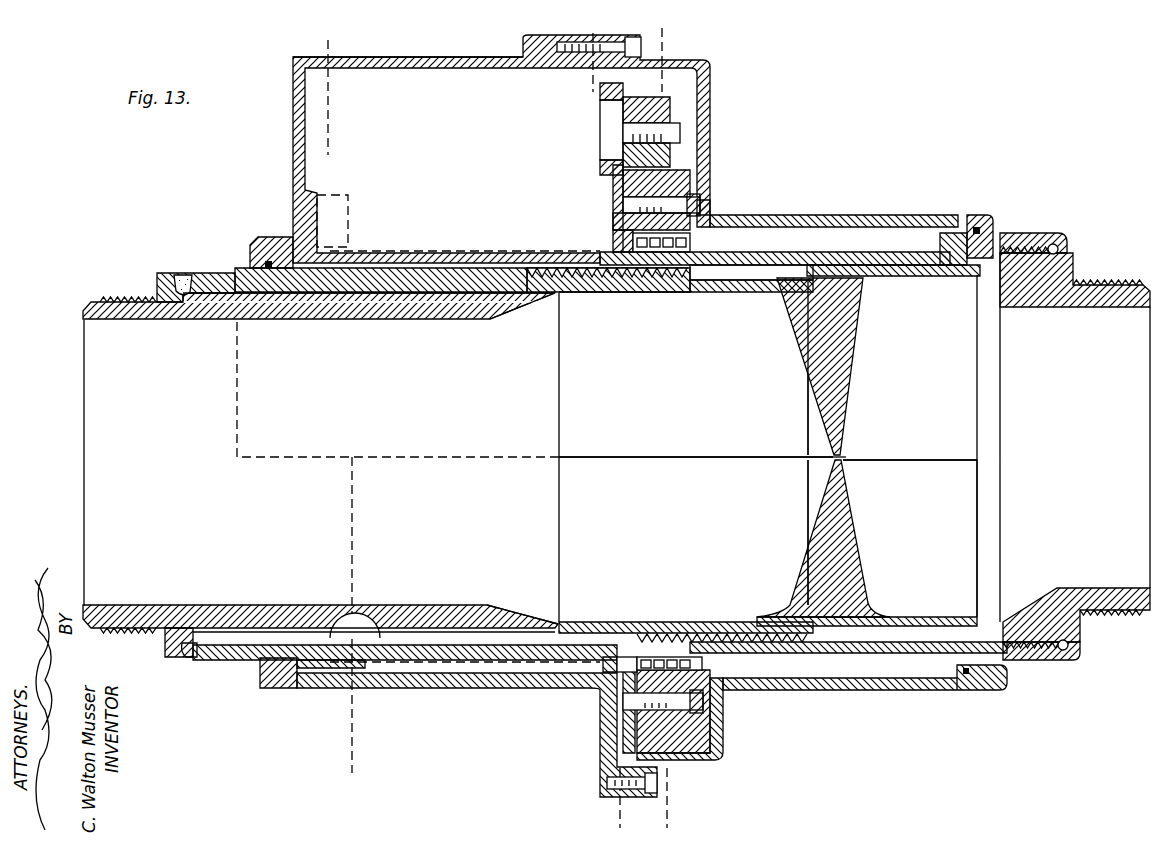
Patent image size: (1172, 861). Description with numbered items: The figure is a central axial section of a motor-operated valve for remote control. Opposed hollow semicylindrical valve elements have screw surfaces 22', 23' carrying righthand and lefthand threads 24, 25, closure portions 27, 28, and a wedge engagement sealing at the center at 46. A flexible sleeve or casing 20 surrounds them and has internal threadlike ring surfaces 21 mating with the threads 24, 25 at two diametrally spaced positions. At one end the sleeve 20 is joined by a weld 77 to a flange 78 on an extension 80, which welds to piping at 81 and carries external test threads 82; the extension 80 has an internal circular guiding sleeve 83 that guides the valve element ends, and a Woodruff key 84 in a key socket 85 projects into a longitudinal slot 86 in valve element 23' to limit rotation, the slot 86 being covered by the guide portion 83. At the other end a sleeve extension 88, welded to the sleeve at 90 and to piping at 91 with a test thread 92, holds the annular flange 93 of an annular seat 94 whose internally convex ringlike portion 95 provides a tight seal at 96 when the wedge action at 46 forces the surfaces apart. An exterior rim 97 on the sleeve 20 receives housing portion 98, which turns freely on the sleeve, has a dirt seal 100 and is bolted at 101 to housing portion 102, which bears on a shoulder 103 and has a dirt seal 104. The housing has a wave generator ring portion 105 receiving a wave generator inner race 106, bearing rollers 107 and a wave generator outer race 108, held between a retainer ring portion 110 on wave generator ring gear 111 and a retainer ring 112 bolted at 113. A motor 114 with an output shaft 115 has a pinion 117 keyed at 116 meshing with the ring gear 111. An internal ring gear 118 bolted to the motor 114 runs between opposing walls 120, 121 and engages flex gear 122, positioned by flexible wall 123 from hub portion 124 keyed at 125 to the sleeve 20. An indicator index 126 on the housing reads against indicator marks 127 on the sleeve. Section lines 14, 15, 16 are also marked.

The section line 14 is at (342, 51).
The section line 15 is at (605, 76).
The section line 16 is at (640, 43).
The flexible wall, sleeve or casing 20 is at (848, 442).
The internal threadlike ring surfaces 21 is at (680, 622).
The screw surface 22' is at (696, 374).
The screw surface 23' is at (846, 543).
The righthand thread 24 is at (605, 292).
The lefthand thread 25 is at (745, 633).
The closure portion 27 is at (845, 368).
The closure portion 28 is at (855, 555).
The wedge engagement center seal 46 is at (842, 458).
The weld 77 is at (185, 275).
The flange 78 is at (160, 281).
The extension 80 is at (110, 300).
The weld 81 is at (83, 320).
The external threads 82 is at (113, 298).
The internal circular guiding sleeve 83 is at (426, 305).
The Woodruff key 84 is at (385, 612).
The key socket 85 is at (345, 615).
The longitudinal slot 86 is at (463, 627).
The sleeve extension 88 is at (1027, 235).
The weld 90 is at (1060, 248).
The weld 91 is at (1150, 290).
The external thread 92 is at (1108, 272).
The annular flange 93 is at (968, 216).
The annular seat 94 is at (835, 268).
The internal ringlike portion 95 is at (775, 292).
The seal 96 is at (865, 293).
The exterior rim 97 is at (950, 235).
The housing portion 98 is at (893, 216).
The dirt seal 100 is at (978, 230).
The bolts 101 is at (640, 48).
The housing portion 102 is at (462, 60).
The shoulder 103 is at (280, 688).
The dirt seal 104 is at (268, 662).
The wave generator ring portion 105 is at (690, 180).
The wave generator inner race 106 is at (690, 246).
The bearing rollers 107 is at (668, 292).
The wave generator outer race 108 is at (613, 222).
The retainer ring portion 110 is at (712, 222).
The wave generator ring gear 111 is at (670, 165).
The retainer ring 112 is at (625, 243).
The bolts 113 is at (700, 205).
The motor 114 is at (501, 149).
The output shaft 115 is at (622, 133).
The key 116 is at (680, 128).
The pinion 117 is at (668, 101).
The internal ring gear 118 is at (623, 730).
The wall 120 is at (685, 768).
The wall 121 is at (610, 768).
The flex gear 122 is at (620, 657).
The flexible wall 123 is at (515, 658).
The hub portion 124 is at (305, 628).
The key 125 is at (292, 300).
The indicator index 126 is at (258, 240).
The indicator marks 127 is at (235, 270).